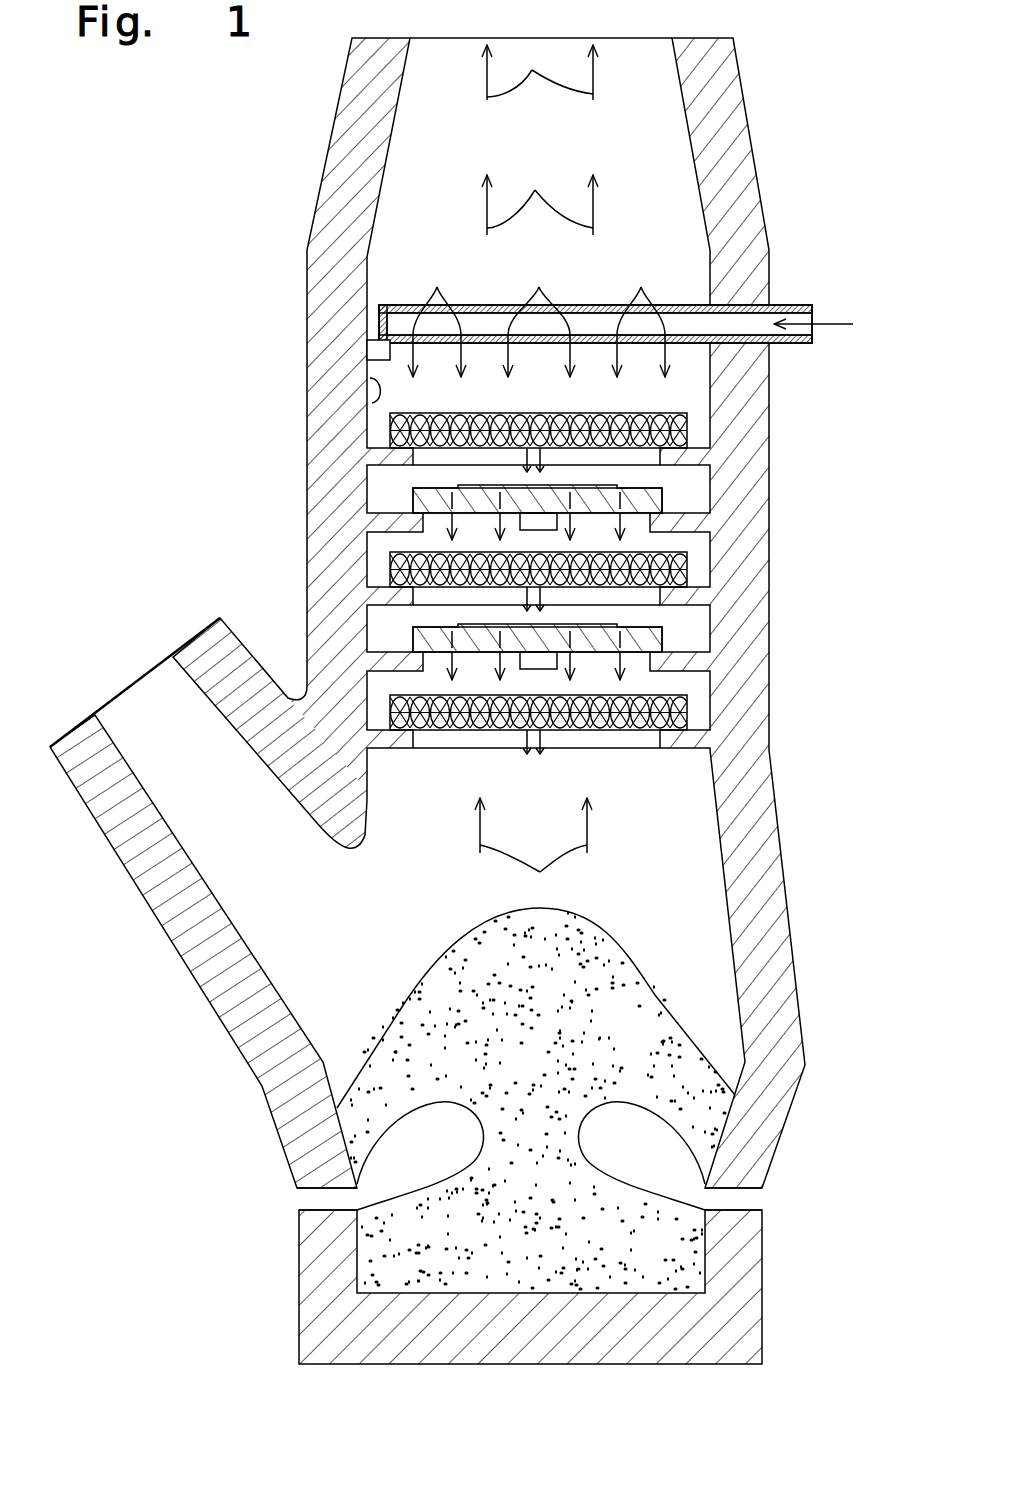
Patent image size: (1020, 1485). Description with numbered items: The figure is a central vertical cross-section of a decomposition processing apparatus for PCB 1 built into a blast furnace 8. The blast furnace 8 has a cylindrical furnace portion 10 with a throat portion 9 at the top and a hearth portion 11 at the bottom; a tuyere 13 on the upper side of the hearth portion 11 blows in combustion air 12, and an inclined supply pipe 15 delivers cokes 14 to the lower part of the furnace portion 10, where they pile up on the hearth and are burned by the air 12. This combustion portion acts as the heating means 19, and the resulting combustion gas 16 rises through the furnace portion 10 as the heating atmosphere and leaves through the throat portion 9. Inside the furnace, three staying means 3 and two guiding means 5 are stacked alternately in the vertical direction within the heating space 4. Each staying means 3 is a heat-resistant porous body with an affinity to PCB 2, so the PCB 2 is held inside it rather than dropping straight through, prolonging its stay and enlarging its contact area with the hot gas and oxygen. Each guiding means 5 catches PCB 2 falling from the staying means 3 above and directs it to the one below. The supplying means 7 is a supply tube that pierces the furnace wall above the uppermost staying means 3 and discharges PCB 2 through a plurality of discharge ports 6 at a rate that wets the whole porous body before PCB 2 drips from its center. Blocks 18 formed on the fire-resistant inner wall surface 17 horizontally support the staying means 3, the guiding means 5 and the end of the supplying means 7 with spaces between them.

The decomposition processing apparatus for PCB 1 is at (237, 377).
The PCB 2 is at (845, 322).
The staying means 3 is at (390, 428).
The heating space 4 is at (522, 847).
The guiding means 5 is at (662, 494).
The discharge ports 6 is at (539, 316).
The supplying means 7 is at (380, 322).
The blast furnace 8 is at (748, 815).
The throat portion 9 is at (443, 52).
The furnace portion 10 is at (712, 527).
The hearth portion 11 is at (737, 1270).
The combustion air 12 is at (290, 1198).
The tuyere 13 is at (312, 1202).
The cokes 14 is at (653, 1018).
The supply pipe 15 is at (149, 694).
The combustion gas 16 is at (536, 471).
The inner wall surface 17 is at (370, 402).
The block 18 is at (386, 516).
The heating means 19 is at (404, 969).